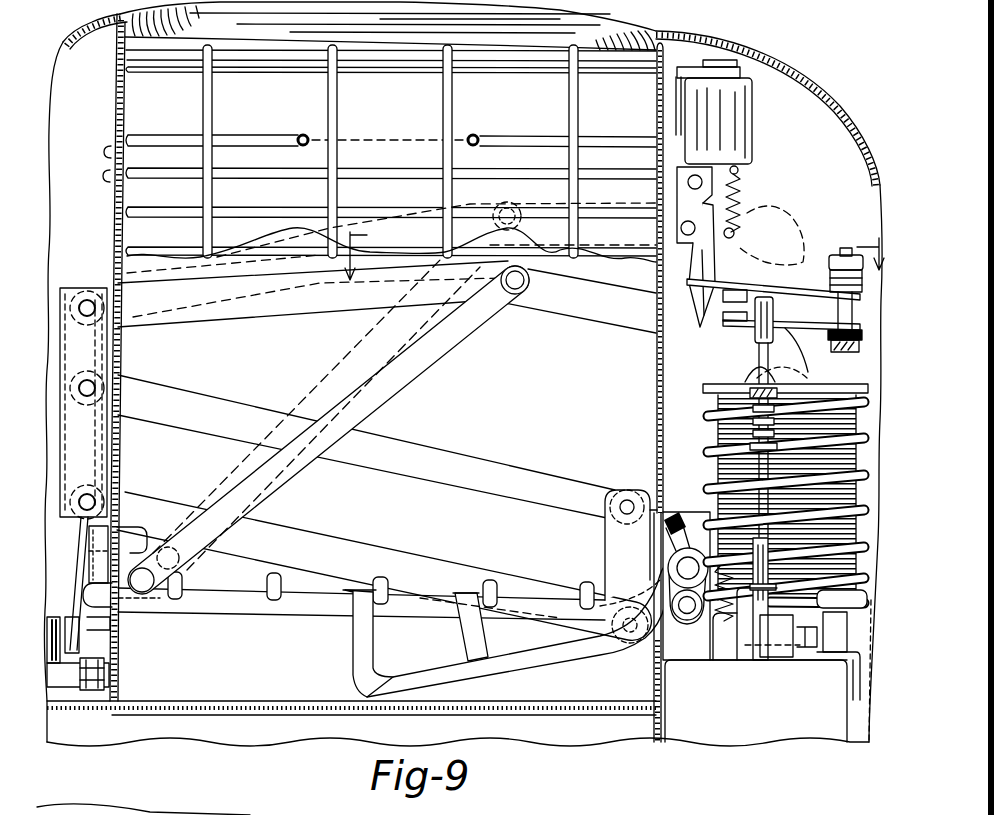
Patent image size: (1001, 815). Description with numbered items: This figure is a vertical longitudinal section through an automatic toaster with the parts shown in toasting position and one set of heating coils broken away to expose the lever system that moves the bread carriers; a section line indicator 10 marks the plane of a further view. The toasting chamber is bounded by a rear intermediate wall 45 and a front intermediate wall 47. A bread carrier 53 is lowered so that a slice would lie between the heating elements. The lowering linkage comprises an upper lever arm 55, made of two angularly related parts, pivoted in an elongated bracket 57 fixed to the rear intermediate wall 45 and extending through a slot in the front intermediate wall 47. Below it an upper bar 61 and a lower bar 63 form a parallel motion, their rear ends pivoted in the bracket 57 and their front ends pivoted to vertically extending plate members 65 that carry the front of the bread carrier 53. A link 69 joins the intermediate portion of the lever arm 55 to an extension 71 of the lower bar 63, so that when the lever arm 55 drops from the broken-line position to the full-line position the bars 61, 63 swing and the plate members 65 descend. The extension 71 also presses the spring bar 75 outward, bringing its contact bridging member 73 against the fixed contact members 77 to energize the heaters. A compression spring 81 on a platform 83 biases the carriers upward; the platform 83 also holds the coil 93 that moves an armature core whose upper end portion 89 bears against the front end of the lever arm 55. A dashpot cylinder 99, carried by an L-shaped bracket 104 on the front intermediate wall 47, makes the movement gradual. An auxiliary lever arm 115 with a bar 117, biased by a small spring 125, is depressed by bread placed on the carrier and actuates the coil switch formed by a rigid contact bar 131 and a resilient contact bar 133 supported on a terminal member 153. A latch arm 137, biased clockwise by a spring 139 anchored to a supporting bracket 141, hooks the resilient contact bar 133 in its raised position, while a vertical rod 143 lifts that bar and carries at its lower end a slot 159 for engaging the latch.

The section line indicator 10 is at (613, 270).
The rear intermediate wall 45 is at (116, 102).
The front intermediate wall 47 is at (656, 78).
The bread carrier 53 is at (235, 612).
The upper lever arm 55 is at (286, 318).
The elongated bracket 57 is at (76, 286).
The upper bar 61 is at (432, 485).
The lower bar 63 is at (333, 541).
The plate member 65 is at (689, 510).
The link 69 is at (428, 374).
The extension 71 is at (152, 541).
The contact bridging member 73 is at (78, 582).
The spring bar 75 is at (86, 552).
The fixed contact member 77 is at (78, 612).
The compression spring 81 is at (705, 415).
The platform 83 is at (791, 619).
The upper end portion of armature core 89 is at (745, 355).
The coil 93 is at (712, 439).
The cylinder 99 is at (753, 150).
The bracket 104 is at (693, 67).
The auxiliary lever arm 115 is at (593, 670).
The bar 117 is at (503, 674).
The spring 125 is at (698, 581).
The rigid contact bar 131 is at (799, 355).
The resilient contact bar 133 is at (776, 296).
The latch arm 137 is at (715, 247).
The spring 139 is at (742, 202).
The supporting bracket 141 is at (770, 207).
The rod 143 is at (716, 463).
The terminal member 153 is at (843, 253).
The slot 159 is at (779, 653).